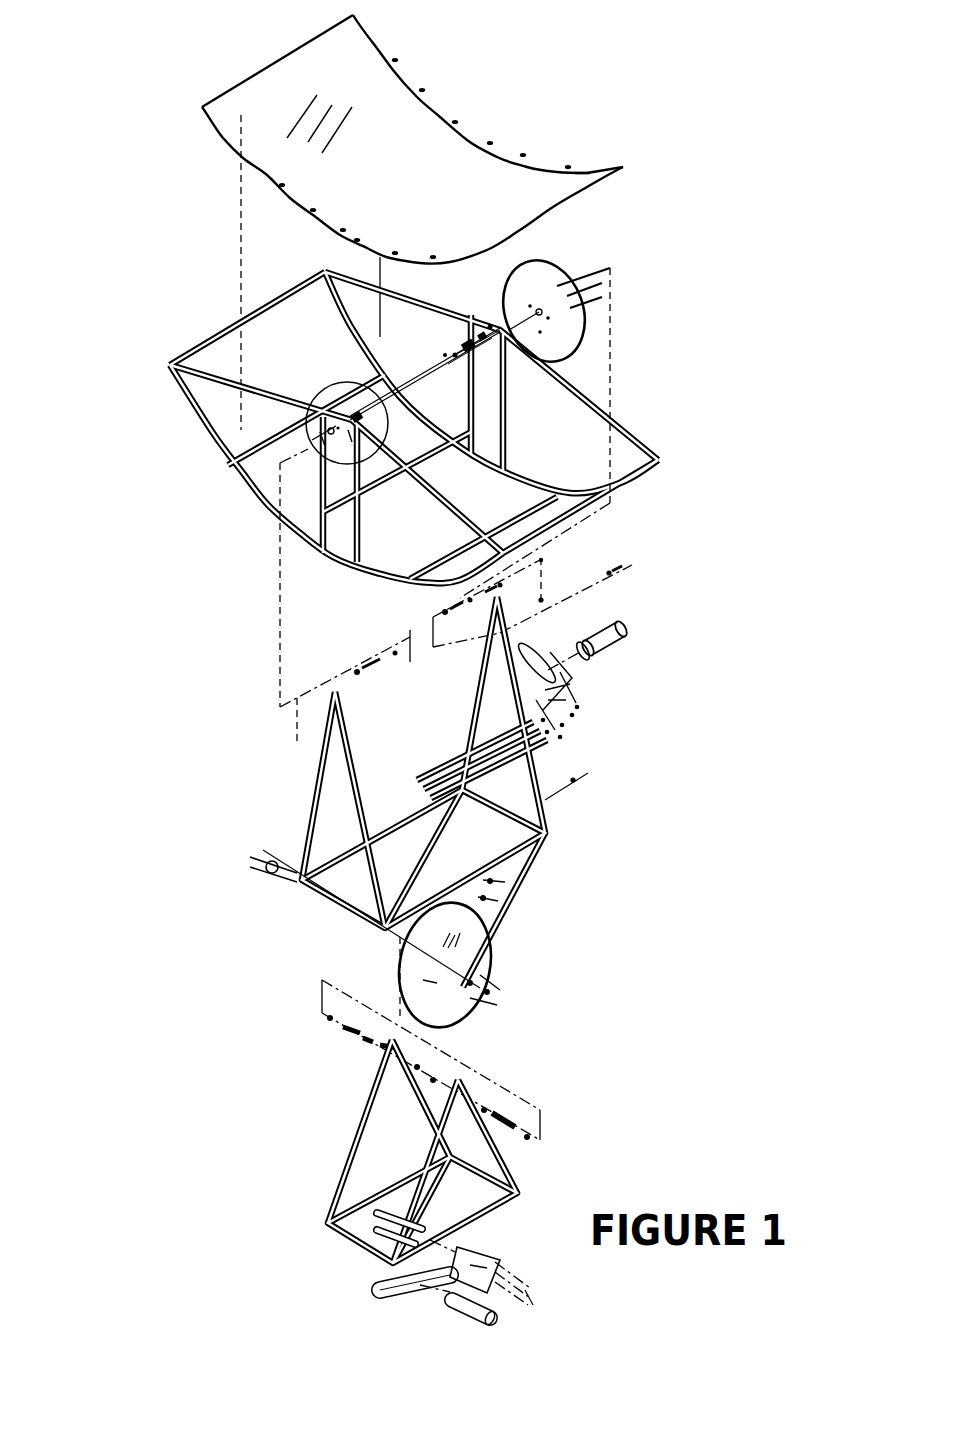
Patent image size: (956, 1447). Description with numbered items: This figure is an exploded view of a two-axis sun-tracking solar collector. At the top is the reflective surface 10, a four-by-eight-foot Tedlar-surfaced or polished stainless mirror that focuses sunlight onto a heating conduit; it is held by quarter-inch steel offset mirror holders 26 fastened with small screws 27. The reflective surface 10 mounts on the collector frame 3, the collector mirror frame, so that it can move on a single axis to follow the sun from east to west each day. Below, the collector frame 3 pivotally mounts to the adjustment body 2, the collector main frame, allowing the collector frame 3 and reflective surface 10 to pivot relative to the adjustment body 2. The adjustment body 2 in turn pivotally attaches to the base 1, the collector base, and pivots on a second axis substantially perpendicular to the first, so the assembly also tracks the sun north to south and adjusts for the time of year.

The base 1 is at (353, 1137).
The adjustment body 2 is at (303, 828).
The collector frame 3 is at (195, 345).
The reflective surface 10 is at (202, 109).
The steel offset mirror holder 26 is at (572, 166).
The screw 27 is at (238, 117).